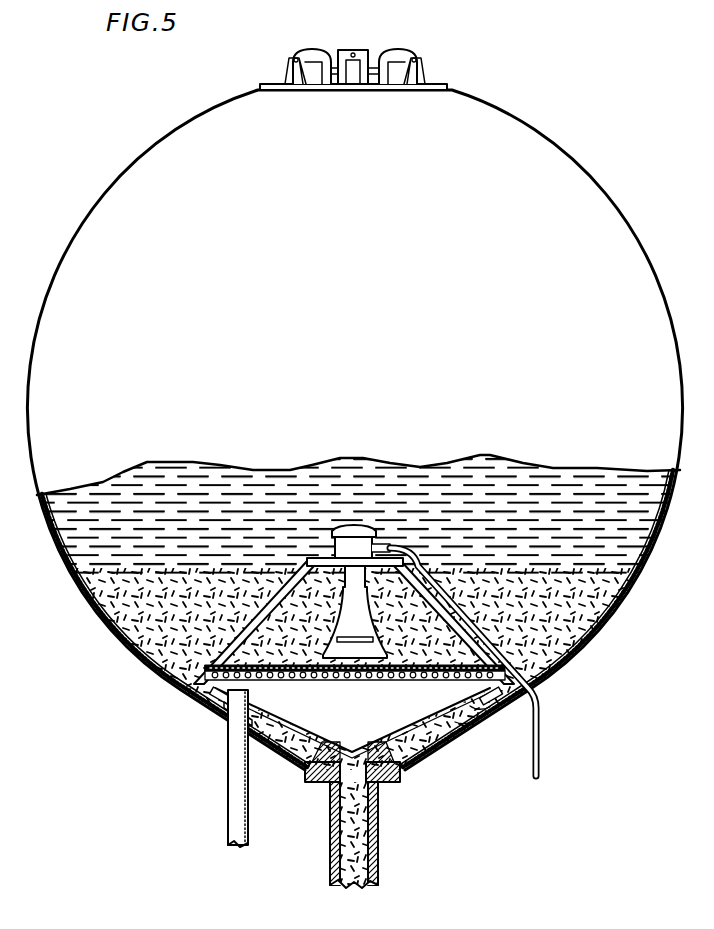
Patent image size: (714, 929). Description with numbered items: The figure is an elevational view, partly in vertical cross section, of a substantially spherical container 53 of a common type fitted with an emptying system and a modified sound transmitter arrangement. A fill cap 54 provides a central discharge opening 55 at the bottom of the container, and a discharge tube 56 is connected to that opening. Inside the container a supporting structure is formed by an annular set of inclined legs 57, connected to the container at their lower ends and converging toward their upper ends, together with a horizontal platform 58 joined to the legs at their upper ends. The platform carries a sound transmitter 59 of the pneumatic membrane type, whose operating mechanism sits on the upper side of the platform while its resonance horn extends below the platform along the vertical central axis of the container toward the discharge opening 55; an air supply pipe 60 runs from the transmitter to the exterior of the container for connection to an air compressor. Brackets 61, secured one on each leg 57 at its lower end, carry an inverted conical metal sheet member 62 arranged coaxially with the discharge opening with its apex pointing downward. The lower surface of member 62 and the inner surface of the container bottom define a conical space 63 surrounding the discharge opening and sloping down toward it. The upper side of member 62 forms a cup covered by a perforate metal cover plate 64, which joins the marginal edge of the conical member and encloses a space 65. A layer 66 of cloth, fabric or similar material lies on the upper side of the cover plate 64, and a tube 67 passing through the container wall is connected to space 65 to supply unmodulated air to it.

The spherical container 53 is at (578, 160).
The fill cap 54 is at (390, 54).
The central discharge opening 55 is at (380, 780).
The discharge tube 56 is at (379, 840).
The inclined legs 57 is at (162, 675).
The horizontal platform 58 is at (323, 558).
The sound transmitter 59 is at (356, 526).
The air supply pipe 60 is at (540, 742).
The brackets 61 is at (224, 710).
The inverted conical metal sheet member 62 is at (273, 722).
The conical space 63 is at (322, 785).
The perforate metal cover plate 64 is at (474, 714).
The space 65 is at (448, 720).
The layer of cloth 66 is at (250, 722).
The tube 67 is at (227, 814).